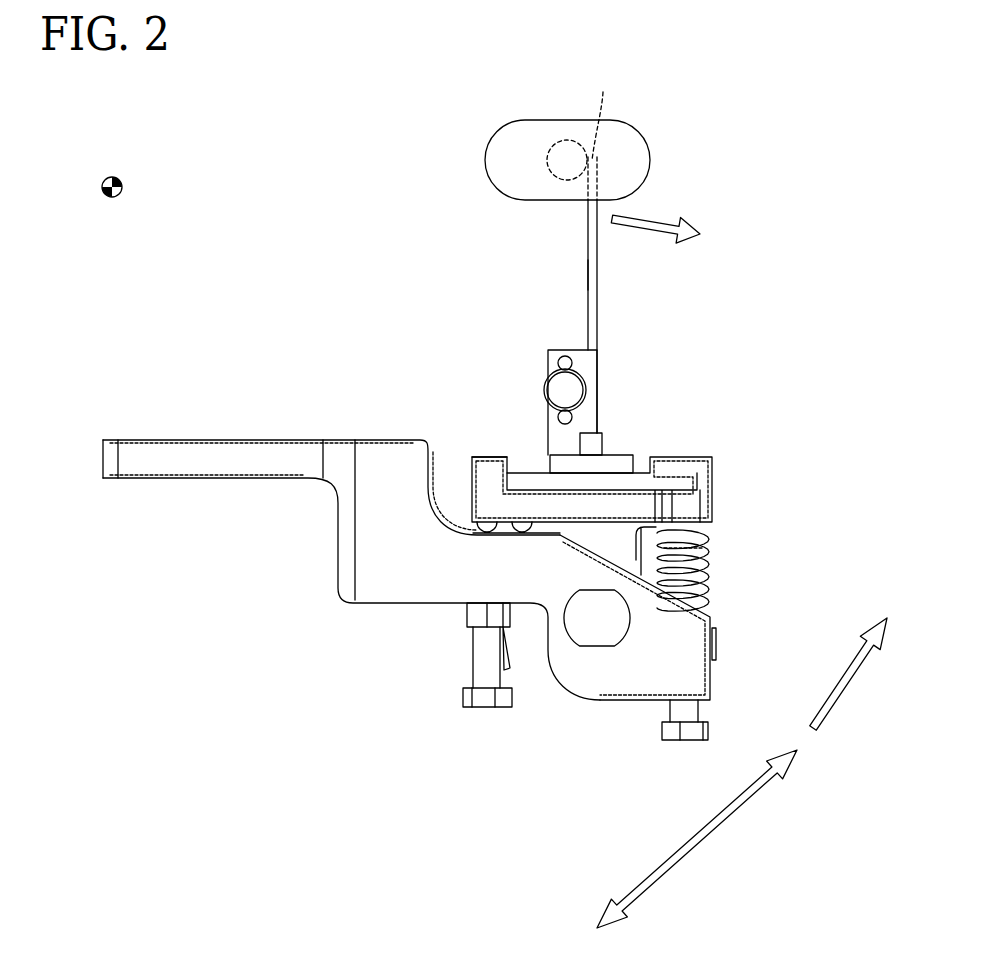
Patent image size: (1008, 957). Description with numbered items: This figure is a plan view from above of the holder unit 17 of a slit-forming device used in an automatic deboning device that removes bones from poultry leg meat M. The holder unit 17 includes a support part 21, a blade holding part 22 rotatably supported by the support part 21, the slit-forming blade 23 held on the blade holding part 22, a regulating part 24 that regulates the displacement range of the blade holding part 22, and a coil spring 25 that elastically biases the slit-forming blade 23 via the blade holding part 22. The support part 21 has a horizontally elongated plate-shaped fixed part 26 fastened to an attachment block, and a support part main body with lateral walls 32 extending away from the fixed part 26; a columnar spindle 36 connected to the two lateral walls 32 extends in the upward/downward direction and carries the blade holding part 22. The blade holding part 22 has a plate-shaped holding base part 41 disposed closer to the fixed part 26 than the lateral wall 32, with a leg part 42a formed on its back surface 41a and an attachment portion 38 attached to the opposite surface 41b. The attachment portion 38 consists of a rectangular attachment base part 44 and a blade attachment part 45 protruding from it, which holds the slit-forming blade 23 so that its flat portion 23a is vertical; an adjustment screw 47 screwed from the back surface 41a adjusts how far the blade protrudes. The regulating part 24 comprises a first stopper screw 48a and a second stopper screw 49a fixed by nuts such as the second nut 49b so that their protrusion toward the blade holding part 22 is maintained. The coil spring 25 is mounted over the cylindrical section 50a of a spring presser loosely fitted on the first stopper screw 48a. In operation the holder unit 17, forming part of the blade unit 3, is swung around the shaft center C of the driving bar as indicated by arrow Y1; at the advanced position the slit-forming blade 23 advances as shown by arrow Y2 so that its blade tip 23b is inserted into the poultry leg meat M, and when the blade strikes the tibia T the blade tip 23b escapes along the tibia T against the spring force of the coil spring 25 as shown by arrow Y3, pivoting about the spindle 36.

The blade unit 3 is at (784, 245).
The holder unit 17 is at (345, 392).
The support part 21 is at (374, 628).
The blade holding part 22 is at (698, 447).
The slit-forming blade 23 is at (597, 297).
The flat portion 23a is at (588, 272).
The blade tip 23b is at (603, 109).
The regulating part 24 is at (462, 712).
The coil spring 25 is at (712, 577).
The fixed part 26 is at (170, 480).
The lateral wall 32 is at (679, 693).
The spindle 36 is at (617, 620).
The attachment portion 38 is at (653, 409).
The holding base part 41 is at (616, 569).
The back surface 41a is at (532, 530).
The surface 41b is at (532, 470).
The leg part 42a is at (627, 550).
The attachment base part 44 is at (615, 453).
The blade attachment part 45 is at (597, 377).
The adjustment screw 47 is at (580, 445).
The first stopper screw 48a is at (695, 743).
The second stopper screw 49a is at (485, 707).
The second nut 49b is at (470, 615).
The cylindrical section 50a is at (692, 547).
The shaft center C is at (113, 198).
The poultry leg meat M is at (652, 157).
The tibia T is at (545, 153).
The arrow Y1 is at (697, 839).
The arrow Y2 is at (848, 674).
The arrow Y3 is at (655, 240).